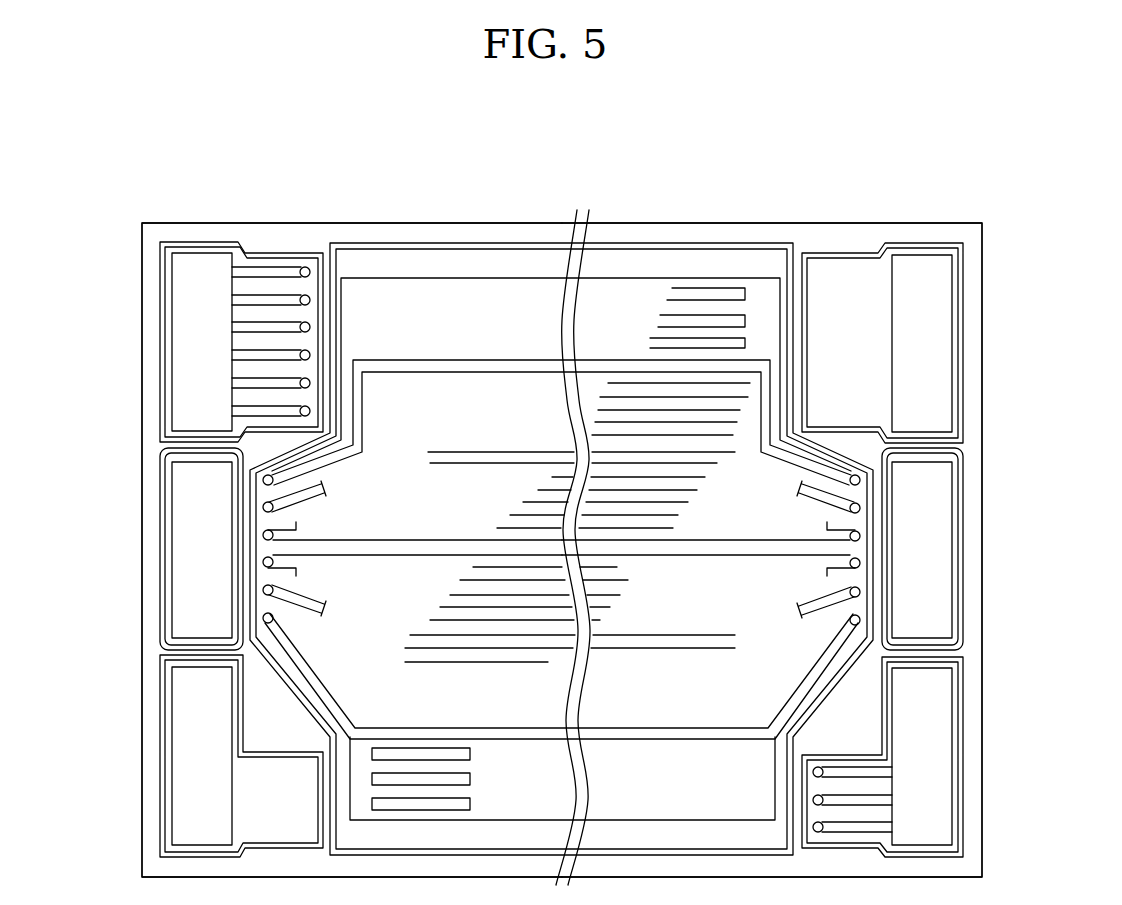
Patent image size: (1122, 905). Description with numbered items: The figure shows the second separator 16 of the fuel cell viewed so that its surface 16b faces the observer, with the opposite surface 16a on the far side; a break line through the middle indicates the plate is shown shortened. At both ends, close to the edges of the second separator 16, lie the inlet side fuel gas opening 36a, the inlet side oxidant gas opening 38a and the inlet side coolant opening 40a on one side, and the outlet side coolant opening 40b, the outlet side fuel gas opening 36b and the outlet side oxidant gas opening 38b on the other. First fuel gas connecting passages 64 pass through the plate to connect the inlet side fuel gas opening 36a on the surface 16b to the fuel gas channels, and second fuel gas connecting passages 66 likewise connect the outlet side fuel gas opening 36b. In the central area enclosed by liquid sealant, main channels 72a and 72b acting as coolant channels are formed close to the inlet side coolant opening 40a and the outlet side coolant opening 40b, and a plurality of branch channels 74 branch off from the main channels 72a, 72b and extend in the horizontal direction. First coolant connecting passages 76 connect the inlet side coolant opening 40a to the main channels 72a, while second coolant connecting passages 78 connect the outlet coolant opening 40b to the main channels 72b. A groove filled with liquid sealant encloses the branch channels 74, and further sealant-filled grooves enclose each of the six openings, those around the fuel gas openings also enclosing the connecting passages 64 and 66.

The second separator 16 is at (654, 218).
The surface of the second separator 16a is at (412, 255).
The surface of the second separator 16b is at (612, 235).
The inlet side fuel gas opening 36a is at (195, 345).
The outlet side fuel gas opening 36b is at (930, 740).
The inlet side oxidant gas opening 38a is at (930, 342).
The outlet side oxidant gas opening 38b is at (195, 748).
The inlet side coolant opening 40a is at (195, 553).
The outlet side coolant opening 40b is at (930, 548).
The first fuel gas connecting passages 64 is at (325, 300).
The second fuel gas connecting passages 66 is at (885, 800).
The main channels 72a is at (295, 536).
The main channels 72b is at (830, 536).
The branch channels 74 is at (655, 440).
The first coolant connecting passages 76 is at (266, 508).
The second coolant connecting passages 78 is at (858, 592).